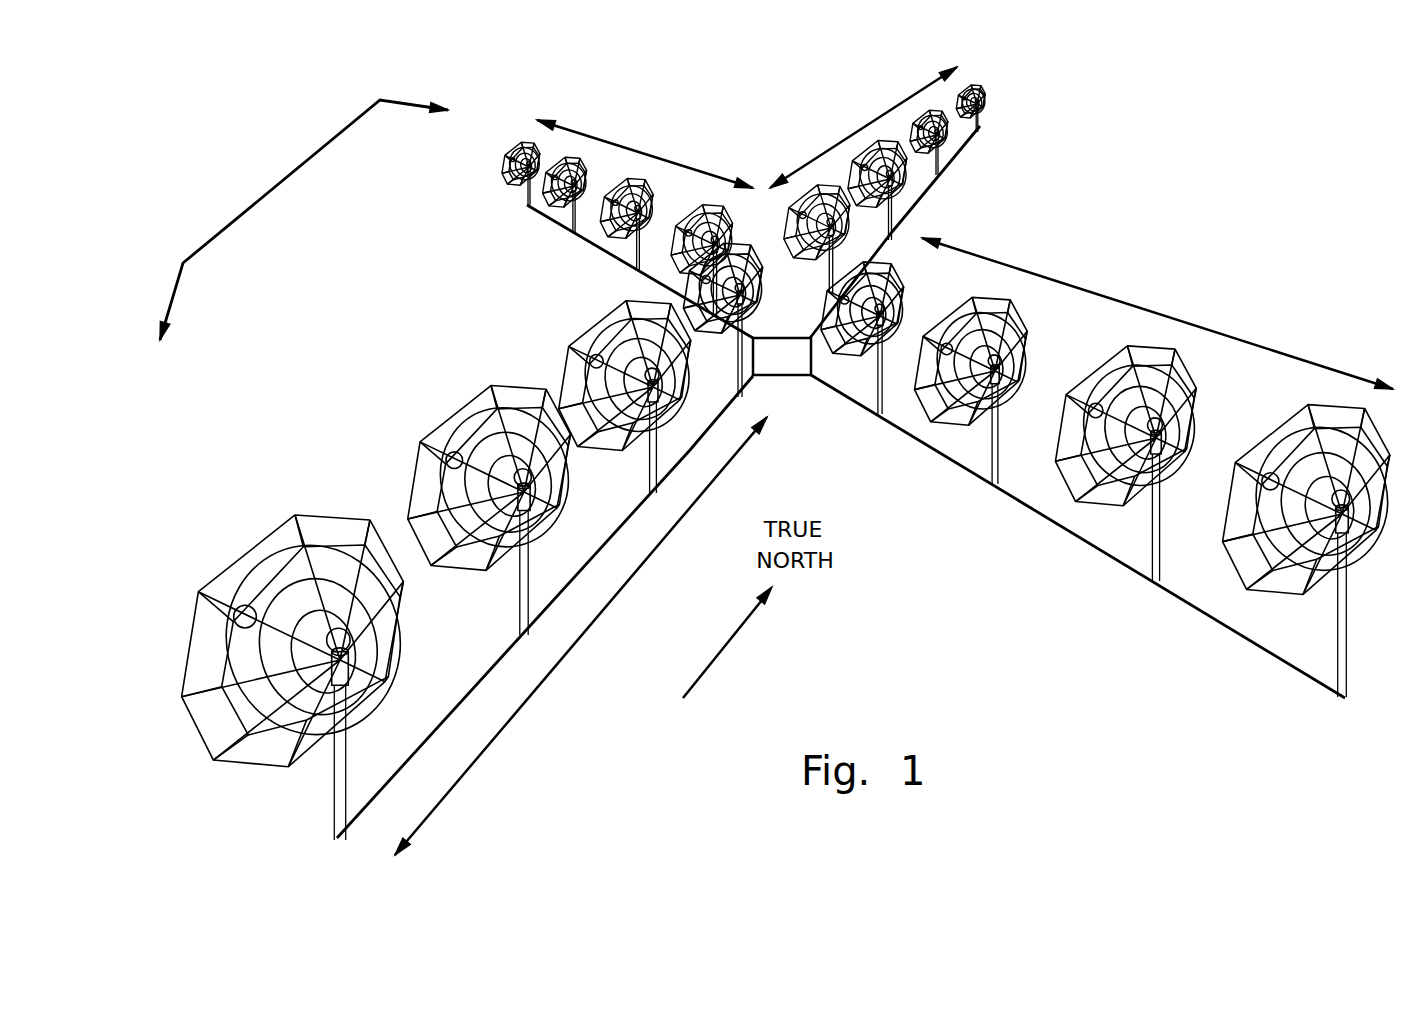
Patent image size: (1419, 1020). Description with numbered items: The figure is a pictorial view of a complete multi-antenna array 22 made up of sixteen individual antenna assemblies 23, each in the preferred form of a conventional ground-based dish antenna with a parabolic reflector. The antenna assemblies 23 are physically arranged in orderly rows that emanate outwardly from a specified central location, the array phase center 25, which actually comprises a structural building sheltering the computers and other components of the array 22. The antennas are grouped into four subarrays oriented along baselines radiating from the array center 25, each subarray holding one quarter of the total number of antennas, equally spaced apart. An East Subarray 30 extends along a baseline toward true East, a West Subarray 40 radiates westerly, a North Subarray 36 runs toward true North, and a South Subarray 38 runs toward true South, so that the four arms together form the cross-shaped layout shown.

The multi-antenna array 22 is at (282, 182).
The antenna assembly 23 is at (300, 488).
The array phase center 25 is at (789, 394).
The East Subarray 30 is at (1143, 307).
The North Subarray 36 is at (873, 122).
The South Subarray 38 is at (573, 647).
The West Subarray 40 is at (637, 152).